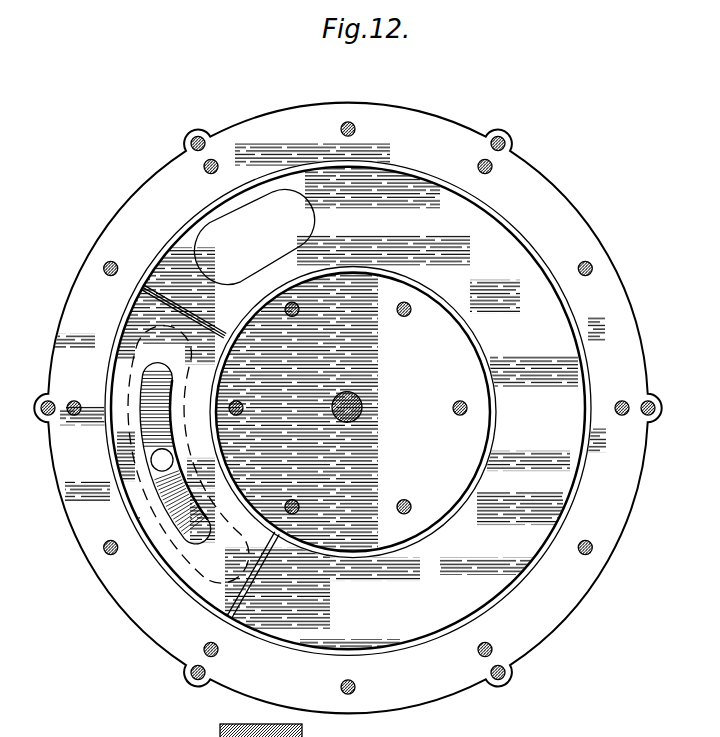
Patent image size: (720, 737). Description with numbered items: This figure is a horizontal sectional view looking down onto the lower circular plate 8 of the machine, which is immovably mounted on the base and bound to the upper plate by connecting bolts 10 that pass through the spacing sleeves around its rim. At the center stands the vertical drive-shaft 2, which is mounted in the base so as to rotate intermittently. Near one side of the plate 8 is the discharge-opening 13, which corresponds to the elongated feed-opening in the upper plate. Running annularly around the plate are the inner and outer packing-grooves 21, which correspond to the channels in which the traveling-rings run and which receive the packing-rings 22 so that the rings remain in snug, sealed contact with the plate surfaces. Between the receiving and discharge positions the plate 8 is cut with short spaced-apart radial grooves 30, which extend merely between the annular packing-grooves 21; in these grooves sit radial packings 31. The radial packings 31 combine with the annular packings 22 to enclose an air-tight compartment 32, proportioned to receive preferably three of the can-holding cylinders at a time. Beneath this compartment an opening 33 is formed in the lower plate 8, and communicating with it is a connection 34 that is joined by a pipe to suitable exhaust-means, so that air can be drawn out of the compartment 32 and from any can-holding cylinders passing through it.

The vertical drive-shaft 2 is at (361, 398).
The lower circular plate 8 is at (621, 330).
The connecting bolts 10 is at (195, 136).
The discharge-opening 13 is at (254, 236).
The annular packing-grooves 21 is at (458, 619).
The packing-rings 22 is at (577, 490).
The radial grooves 30 is at (283, 578).
The radial packings 31 is at (192, 290).
The air-tight compartment 32 is at (207, 582).
The opening 33 is at (157, 478).
The connection 34 is at (187, 527).